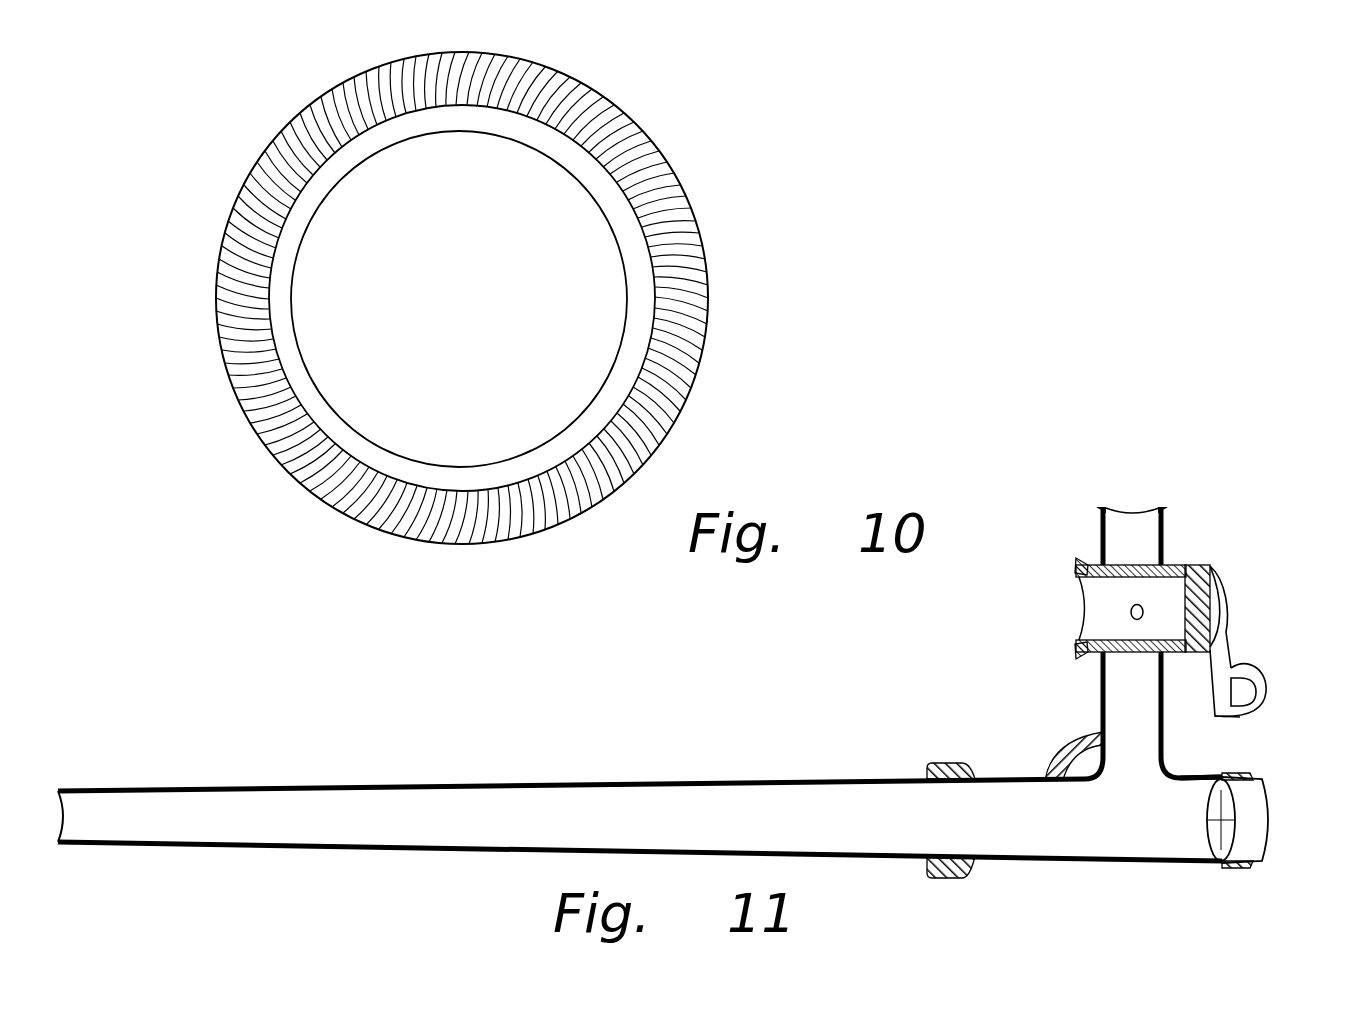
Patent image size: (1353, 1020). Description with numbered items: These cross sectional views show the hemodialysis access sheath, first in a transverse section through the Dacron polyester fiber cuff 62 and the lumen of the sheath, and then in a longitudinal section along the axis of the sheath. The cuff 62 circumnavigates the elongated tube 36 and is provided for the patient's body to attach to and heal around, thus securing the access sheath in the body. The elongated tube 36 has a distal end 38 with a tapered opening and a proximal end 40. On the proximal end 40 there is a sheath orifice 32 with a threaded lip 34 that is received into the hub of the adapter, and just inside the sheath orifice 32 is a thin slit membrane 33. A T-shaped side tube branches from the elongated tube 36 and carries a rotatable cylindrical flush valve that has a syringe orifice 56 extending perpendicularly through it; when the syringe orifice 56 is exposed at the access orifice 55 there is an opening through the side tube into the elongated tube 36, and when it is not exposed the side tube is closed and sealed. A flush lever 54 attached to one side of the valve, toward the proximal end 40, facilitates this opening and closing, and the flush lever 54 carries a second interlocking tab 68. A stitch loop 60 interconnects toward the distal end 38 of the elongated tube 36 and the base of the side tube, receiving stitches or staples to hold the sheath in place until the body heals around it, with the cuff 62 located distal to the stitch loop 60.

In FIG. 11, the sheath orifice 32 is at (1270, 821).
In FIG. 11, the thin slit membrane 33 is at (1205, 817).
In FIG. 11, the threaded lip 34 is at (1247, 762).
In FIG. 10, the elongated tube 36 is at (459, 299).
In FIG. 11, the elongated tube 36 is at (515, 780).
In FIG. 11, the distal end 38 is at (77, 780).
In FIG. 11, the proximal end 40 is at (1244, 880).
In FIG. 11, the flush lever 54 is at (1228, 622).
In FIG. 11, the access orifice 55 is at (1168, 503).
In FIG. 11, the syringe orifice 56 is at (1130, 612).
In FIG. 11, the stitch loop 60 is at (1063, 740).
In FIG. 10, the Dacron polyester fiber cuff 62 is at (692, 203).
In FIG. 11, the Dacron polyester fiber cuff 62 is at (942, 763).
In FIG. 11, the second interlocking tab 68 is at (1262, 678).